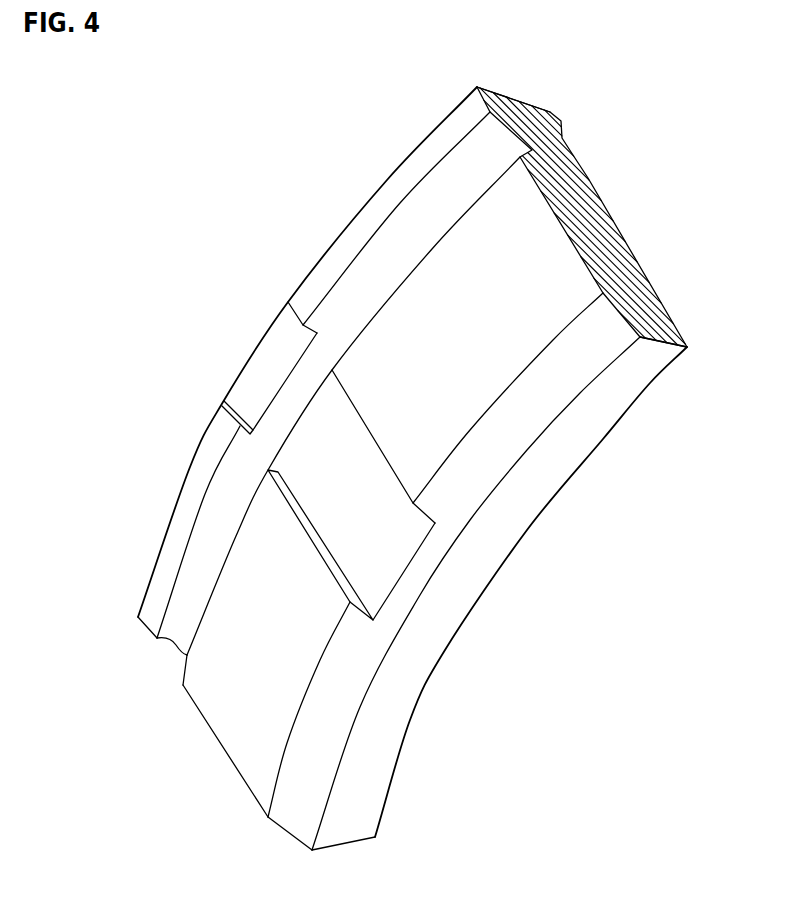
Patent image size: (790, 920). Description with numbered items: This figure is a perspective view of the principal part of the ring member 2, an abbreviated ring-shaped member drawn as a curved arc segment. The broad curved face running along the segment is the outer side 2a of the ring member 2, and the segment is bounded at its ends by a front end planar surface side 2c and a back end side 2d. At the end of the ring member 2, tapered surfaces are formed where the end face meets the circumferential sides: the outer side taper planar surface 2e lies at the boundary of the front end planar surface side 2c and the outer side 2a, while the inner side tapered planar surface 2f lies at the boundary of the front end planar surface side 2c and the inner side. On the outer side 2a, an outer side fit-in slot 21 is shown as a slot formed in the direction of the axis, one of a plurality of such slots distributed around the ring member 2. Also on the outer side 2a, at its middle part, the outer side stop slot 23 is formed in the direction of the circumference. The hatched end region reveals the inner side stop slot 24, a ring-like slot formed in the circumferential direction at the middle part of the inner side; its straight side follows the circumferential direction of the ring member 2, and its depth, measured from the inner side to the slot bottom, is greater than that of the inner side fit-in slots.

The ring member 2 is at (89, 431).
The outer side 2a is at (216, 718).
The front end planar surface side 2c is at (348, 838).
The back end side 2d is at (515, 96).
The outer side taper planar surface 2e is at (300, 817).
The inner side tapered planar surface 2f is at (689, 343).
The outer side fit-in slot 21 is at (328, 529).
The outer side stop slot 23 is at (182, 639).
The inner side stop slot 24 is at (574, 155).